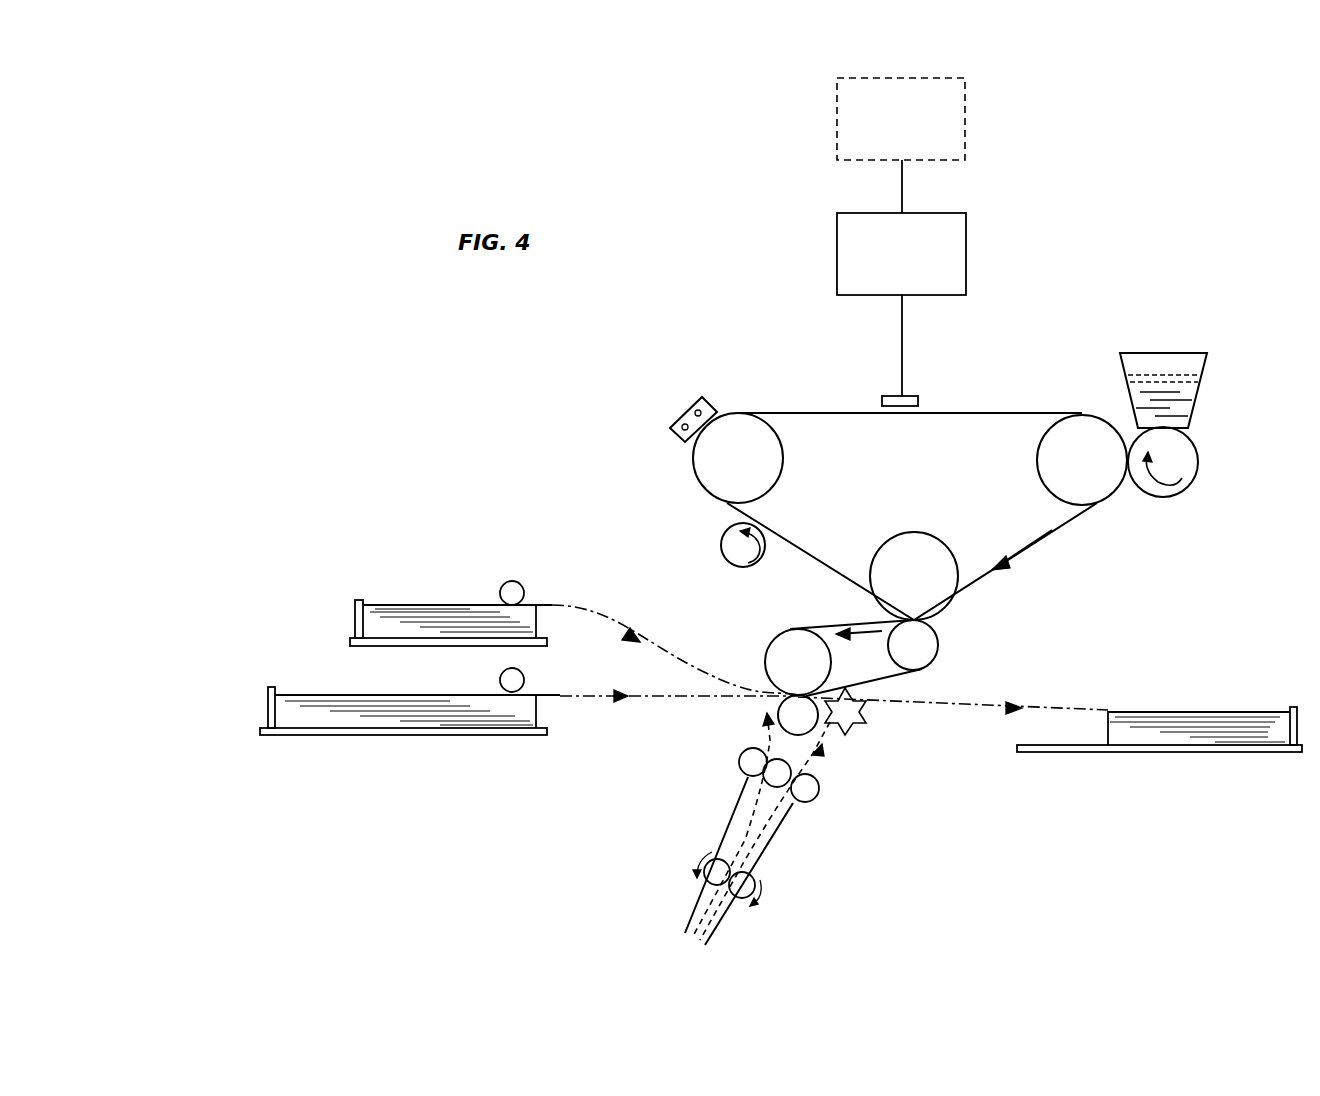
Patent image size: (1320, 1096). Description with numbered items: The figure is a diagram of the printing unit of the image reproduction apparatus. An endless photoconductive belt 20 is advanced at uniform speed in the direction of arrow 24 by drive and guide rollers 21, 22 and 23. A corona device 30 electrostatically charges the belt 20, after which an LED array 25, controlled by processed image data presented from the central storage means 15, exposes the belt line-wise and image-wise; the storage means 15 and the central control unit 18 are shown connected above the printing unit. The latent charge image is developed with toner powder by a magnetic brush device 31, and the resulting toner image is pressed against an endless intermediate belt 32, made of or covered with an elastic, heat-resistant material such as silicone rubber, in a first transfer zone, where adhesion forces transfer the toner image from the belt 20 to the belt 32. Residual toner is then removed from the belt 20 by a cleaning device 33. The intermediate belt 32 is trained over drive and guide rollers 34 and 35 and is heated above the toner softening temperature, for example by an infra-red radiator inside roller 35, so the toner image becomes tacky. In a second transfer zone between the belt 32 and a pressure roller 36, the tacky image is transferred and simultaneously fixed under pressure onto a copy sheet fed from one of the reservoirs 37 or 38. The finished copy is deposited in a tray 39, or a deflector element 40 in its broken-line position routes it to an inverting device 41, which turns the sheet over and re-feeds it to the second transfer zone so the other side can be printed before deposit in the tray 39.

The central storage means 15 is at (852, 212).
The central control unit 18 is at (852, 78).
The endless photoconductive belt 20 is at (858, 412).
The drive and guide roller 21 is at (1042, 460).
The drive and guide roller 22 is at (912, 566).
The drive and guide roller 23 is at (778, 478).
The arrow 24 is at (1014, 550).
The LED array 25 is at (906, 396).
The corona device 30 is at (686, 402).
The magnetic brush device 31 is at (1188, 460).
The endless intermediate belt 32 is at (832, 624).
The cleaning device 33 is at (722, 546).
The drive and guide roller 34 is at (935, 652).
The drive and guide roller 35 is at (778, 660).
The pressure roller 36 is at (778, 722).
The reservoir 37 is at (418, 598).
The reservoir 38 is at (331, 690).
The tray 39 is at (1232, 710).
The deflector element 40 is at (852, 722).
The inverting device 41 is at (768, 852).